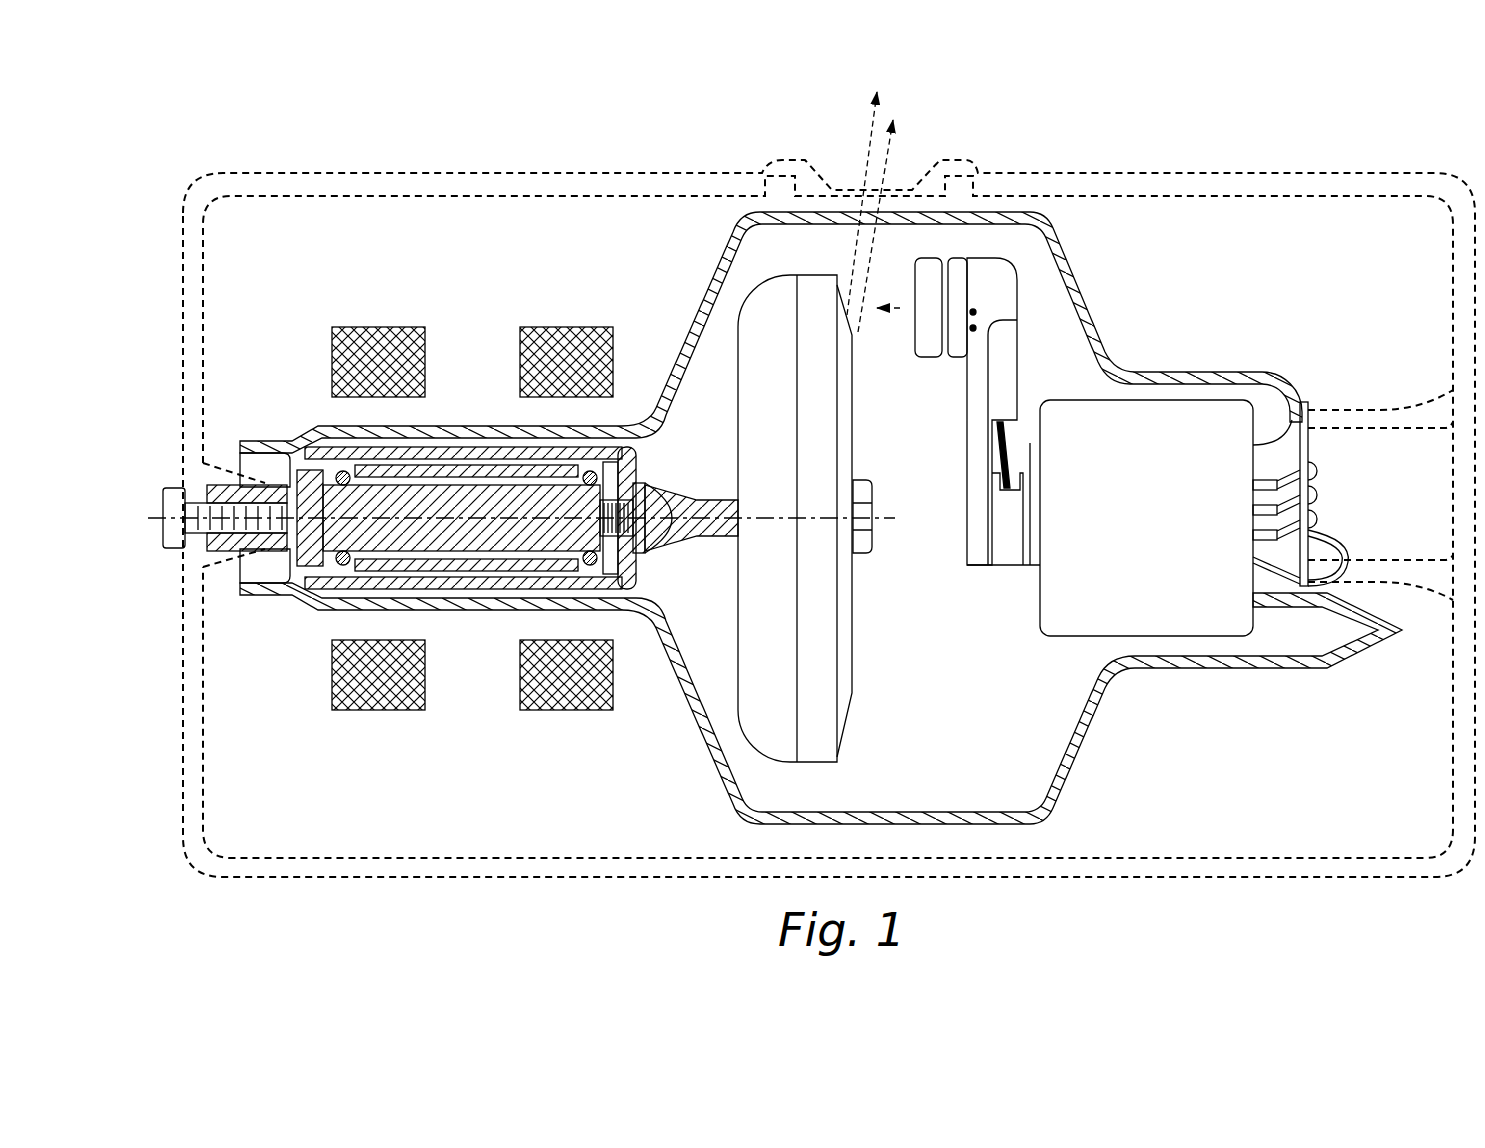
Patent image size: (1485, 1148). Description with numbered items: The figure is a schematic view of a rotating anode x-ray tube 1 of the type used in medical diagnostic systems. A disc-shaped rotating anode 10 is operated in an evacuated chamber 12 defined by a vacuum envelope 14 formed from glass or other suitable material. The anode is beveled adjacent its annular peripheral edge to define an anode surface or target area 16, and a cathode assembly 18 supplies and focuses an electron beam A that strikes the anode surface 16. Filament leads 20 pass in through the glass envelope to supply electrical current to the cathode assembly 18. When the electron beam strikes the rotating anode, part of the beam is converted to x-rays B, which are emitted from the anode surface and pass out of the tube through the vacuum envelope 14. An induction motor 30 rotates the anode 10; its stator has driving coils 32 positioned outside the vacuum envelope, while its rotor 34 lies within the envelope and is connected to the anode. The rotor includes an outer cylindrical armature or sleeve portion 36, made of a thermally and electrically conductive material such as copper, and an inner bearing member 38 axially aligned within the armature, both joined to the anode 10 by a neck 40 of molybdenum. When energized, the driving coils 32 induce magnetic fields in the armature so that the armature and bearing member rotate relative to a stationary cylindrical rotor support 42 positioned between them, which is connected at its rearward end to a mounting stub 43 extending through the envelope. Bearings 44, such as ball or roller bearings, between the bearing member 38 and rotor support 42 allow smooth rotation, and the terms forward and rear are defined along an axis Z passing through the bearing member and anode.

The rotating anode x-ray tube 1 is at (414, 138).
The rotating anode 10 is at (874, 604).
The evacuated chamber 12 is at (937, 756).
The vacuum envelope 14 is at (1083, 740).
The anode surface or target area 16 is at (852, 330).
The cathode assembly 18 is at (1022, 343).
The filament leads 20 is at (1334, 500).
The induction motor 30 is at (520, 752).
The driving coils 32 is at (535, 316).
The rotor 34 is at (460, 592).
The armature or sleeve portion 36 is at (500, 452).
The bearing member 38 is at (498, 538).
The neck 40 is at (652, 512).
The rotor support 42 is at (312, 590).
The mounting stub 43 is at (228, 540).
The bearings 44 is at (344, 471).
The axis Z is at (146, 517).
The electron beam A is at (905, 308).
The x-rays B is at (870, 137).